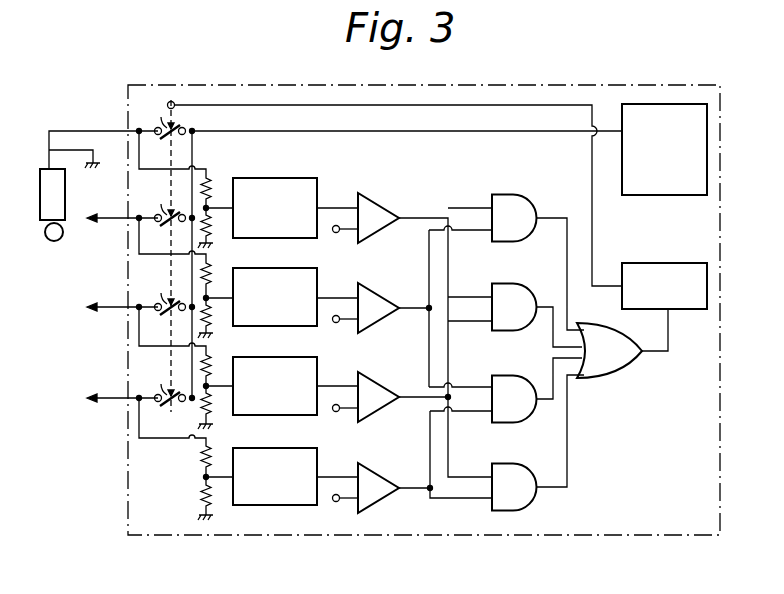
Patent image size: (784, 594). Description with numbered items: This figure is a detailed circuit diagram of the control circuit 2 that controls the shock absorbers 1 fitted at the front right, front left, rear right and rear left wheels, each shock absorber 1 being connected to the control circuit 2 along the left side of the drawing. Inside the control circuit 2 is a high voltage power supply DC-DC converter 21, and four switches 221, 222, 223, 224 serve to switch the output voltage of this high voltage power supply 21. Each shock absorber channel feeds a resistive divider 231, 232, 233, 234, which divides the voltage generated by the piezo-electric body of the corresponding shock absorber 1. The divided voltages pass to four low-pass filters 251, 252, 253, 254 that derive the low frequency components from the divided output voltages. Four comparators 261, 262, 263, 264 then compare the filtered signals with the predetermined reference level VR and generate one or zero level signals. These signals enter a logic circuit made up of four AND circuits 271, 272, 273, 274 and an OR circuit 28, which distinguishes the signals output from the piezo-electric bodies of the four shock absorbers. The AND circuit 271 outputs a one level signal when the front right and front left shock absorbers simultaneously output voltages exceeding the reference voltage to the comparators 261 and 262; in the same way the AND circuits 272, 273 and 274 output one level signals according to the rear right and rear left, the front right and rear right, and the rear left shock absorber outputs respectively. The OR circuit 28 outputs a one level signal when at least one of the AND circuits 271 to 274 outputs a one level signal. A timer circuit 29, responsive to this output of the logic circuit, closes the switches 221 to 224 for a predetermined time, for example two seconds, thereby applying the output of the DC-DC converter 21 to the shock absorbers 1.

The shock absorber 1 is at (99, 256).
The control circuit 2 is at (631, 95).
The high voltage power supply DC-DC converter 21 is at (641, 197).
The switch 221 is at (169, 136).
The switch 222 is at (169, 221).
The switch 223 is at (169, 313).
The switch 224 is at (169, 404).
The resistive divider 231 is at (211, 203).
The resistive divider 232 is at (211, 294).
The resistive divider 233 is at (211, 383).
The resistive divider 234 is at (211, 475).
The low-pass filter 251 is at (317, 178).
The low-pass filter 252 is at (317, 270).
The low-pass filter 253 is at (317, 360).
The low-pass filter 254 is at (317, 451).
The comparator 261 is at (376, 202).
The comparator 262 is at (374, 293).
The comparator 263 is at (381, 381).
The comparator 264 is at (381, 466).
The AND circuit 271 is at (511, 194).
The AND circuit 272 is at (509, 283).
The AND circuit 273 is at (507, 375).
The AND circuit 274 is at (502, 463).
The OR circuit 28 is at (616, 379).
The timer circuit 29 is at (694, 310).